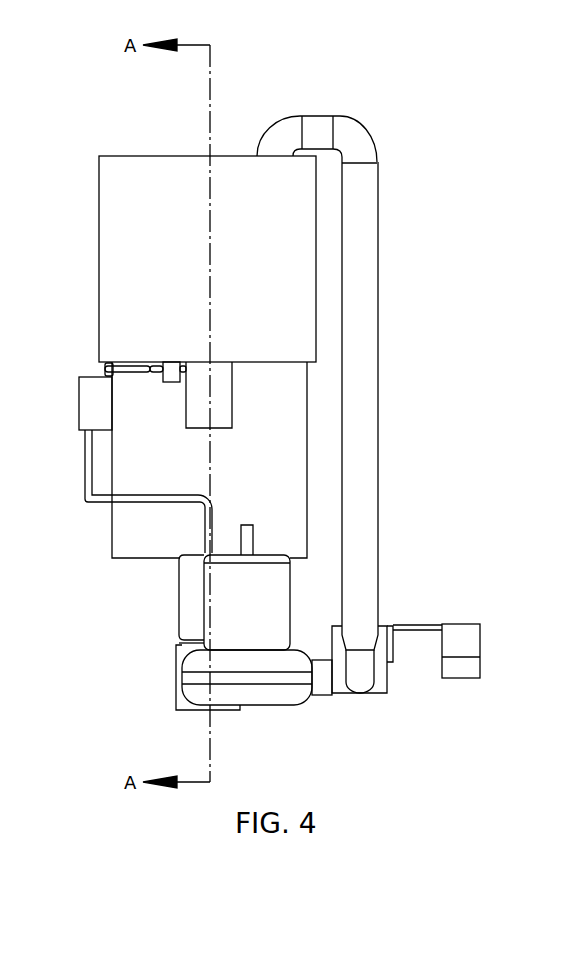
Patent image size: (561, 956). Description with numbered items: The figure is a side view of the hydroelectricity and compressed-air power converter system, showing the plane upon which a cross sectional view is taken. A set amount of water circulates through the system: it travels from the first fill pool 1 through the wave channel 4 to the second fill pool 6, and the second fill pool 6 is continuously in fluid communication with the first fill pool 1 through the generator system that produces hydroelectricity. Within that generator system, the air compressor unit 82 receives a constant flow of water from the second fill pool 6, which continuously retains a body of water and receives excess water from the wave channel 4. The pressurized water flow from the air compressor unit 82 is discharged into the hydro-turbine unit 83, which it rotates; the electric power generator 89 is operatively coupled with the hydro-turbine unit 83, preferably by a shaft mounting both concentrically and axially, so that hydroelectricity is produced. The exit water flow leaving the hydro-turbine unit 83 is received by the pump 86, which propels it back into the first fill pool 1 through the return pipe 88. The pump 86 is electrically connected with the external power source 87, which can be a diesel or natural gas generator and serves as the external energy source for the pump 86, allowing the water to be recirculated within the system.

The first fill pool 1 is at (93, 232).
The wave channel 4 is at (235, 402).
The second fill pool 6 is at (110, 525).
The air compressor unit 82 is at (182, 613).
The hydro-turbine unit 83 is at (258, 706).
The pump 86 is at (383, 690).
The external power source 87 is at (472, 646).
The return pipe 88 is at (372, 447).
The electric power generator 89 is at (282, 613).